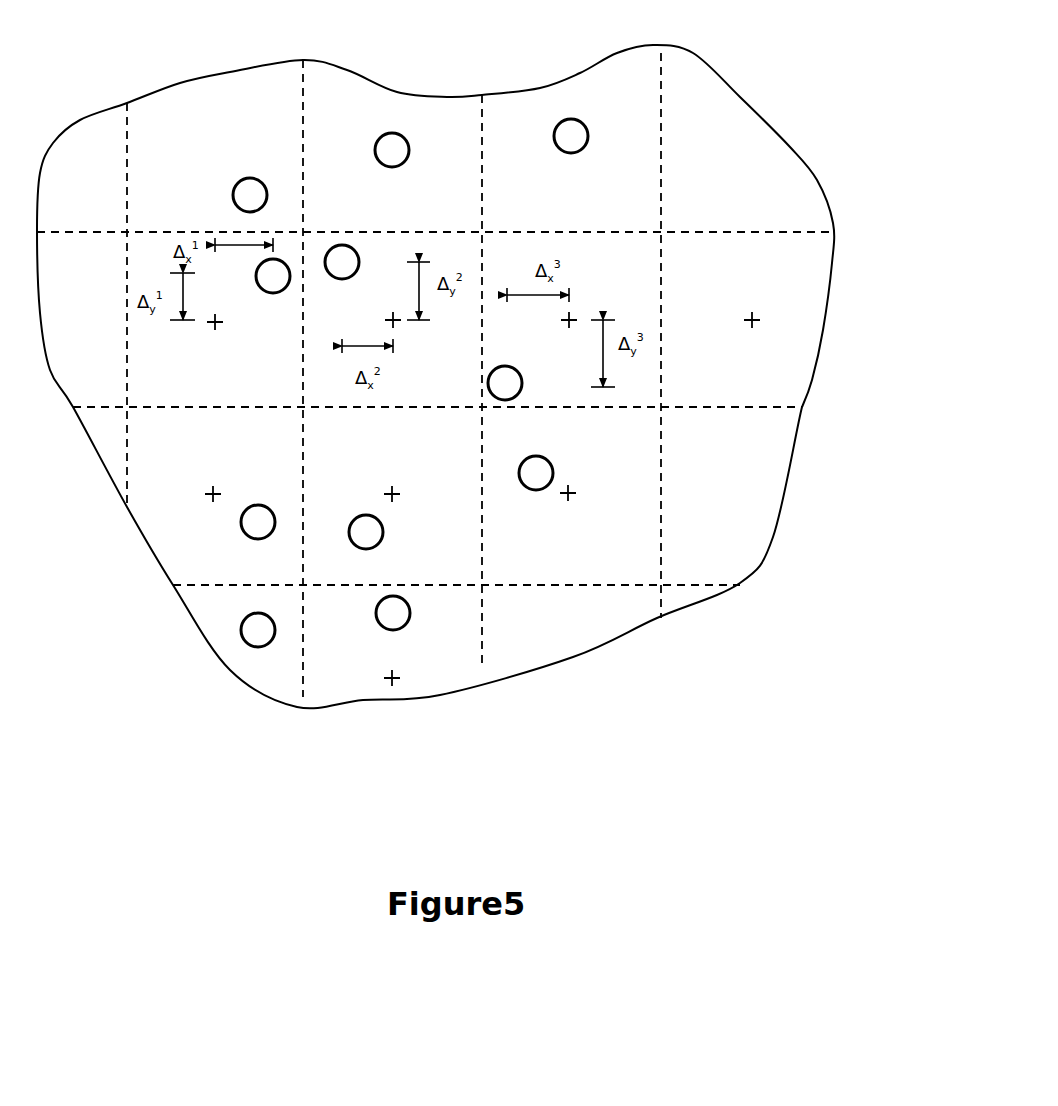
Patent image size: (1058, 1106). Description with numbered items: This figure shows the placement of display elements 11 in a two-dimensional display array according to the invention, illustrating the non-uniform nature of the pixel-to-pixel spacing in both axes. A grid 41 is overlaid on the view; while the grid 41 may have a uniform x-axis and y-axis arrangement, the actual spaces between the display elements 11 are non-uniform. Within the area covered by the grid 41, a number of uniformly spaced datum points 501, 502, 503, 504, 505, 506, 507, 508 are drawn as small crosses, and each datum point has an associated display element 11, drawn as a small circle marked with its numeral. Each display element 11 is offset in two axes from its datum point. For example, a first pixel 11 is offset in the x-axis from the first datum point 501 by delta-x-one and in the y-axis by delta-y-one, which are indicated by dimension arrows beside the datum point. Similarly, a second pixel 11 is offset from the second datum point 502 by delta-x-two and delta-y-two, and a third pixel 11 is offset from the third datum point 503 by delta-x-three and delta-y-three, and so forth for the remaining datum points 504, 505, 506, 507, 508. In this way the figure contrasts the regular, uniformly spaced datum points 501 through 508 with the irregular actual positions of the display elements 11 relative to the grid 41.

The grid 41 is at (817, 107).
The display element 11 is at (397, 437).
The first datum point 501 is at (218, 325).
The second datum point 502 is at (398, 325).
The third datum point 503 is at (575, 315).
The datum point 504 is at (217, 492).
The datum point 505 is at (397, 490).
The datum point 506 is at (572, 490).
The datum point 507 is at (747, 328).
The datum point 508 is at (395, 675).